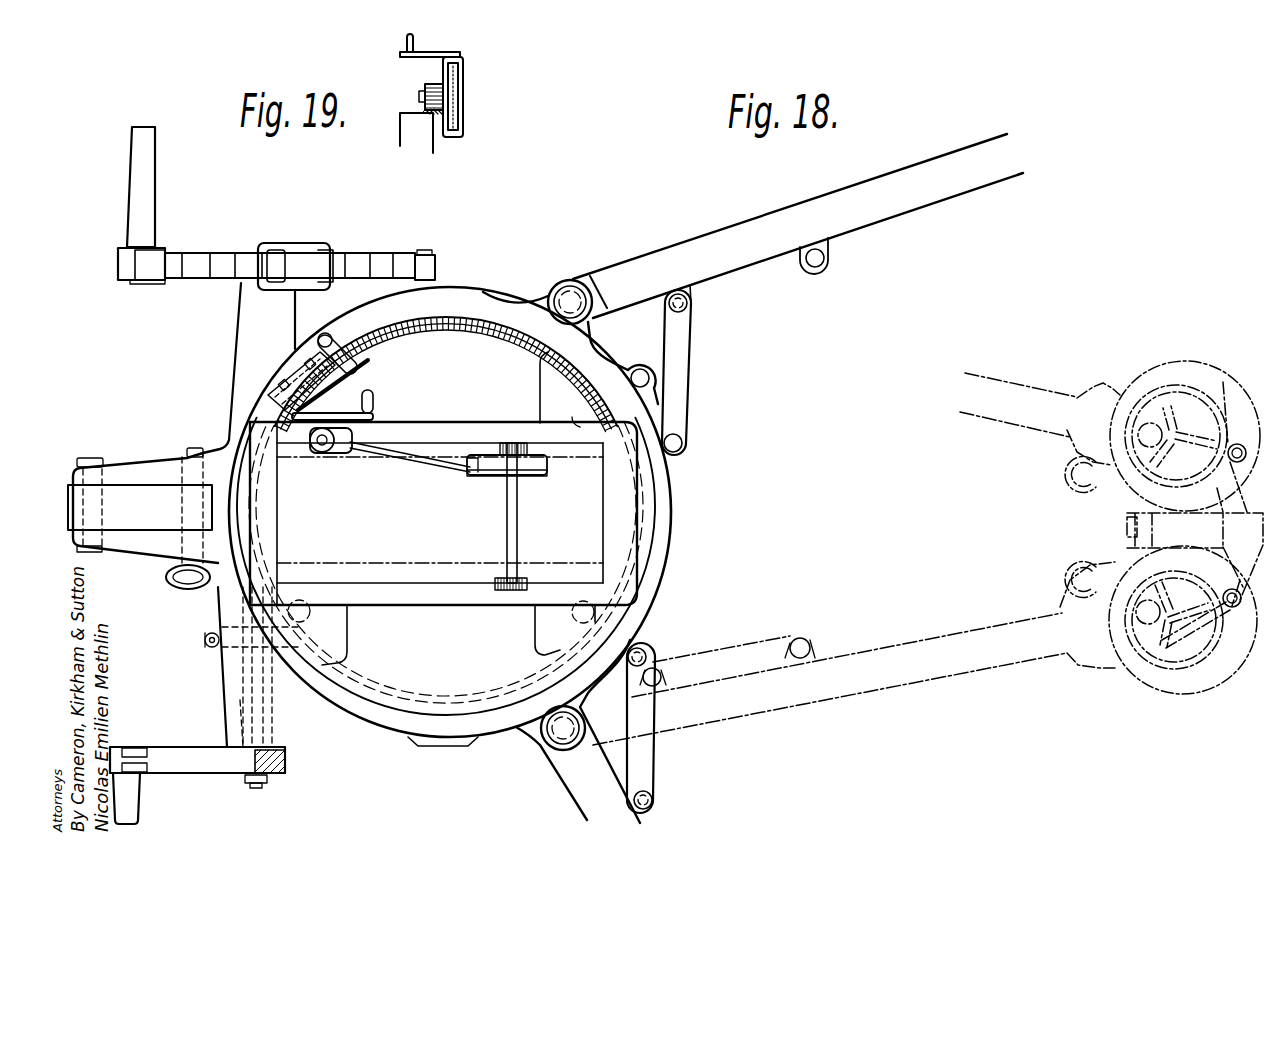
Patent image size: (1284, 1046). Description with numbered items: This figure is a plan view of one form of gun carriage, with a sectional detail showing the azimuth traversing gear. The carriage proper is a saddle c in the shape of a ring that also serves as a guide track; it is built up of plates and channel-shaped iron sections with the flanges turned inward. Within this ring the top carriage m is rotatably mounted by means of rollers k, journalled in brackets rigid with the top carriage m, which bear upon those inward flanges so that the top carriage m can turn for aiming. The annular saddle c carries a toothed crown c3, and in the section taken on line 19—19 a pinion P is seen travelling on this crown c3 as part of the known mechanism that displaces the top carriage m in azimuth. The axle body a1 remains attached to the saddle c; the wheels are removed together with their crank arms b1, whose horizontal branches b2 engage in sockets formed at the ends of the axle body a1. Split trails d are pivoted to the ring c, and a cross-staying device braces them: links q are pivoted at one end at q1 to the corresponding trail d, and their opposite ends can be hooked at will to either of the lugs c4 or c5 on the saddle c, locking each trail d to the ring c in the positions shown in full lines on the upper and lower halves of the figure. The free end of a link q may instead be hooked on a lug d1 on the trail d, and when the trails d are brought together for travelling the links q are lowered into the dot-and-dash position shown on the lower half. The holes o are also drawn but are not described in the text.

In FIG. 19, the pinion P is at (425, 92).
In FIG. 19, the toothed crown c3 is at (429, 118).
In FIG. 18, the toothed crown c3 is at (475, 337).
In FIG. 18, the saddle c is at (500, 307).
In FIG. 18, the axle body a1 is at (202, 713).
In FIG. 18, the crank arms b1 is at (197, 788).
In FIG. 18, the horizontal branches b2 is at (270, 717).
In FIG. 18, the section line 19— 19 is at (383, 403).
In FIG. 18, the top carriage m is at (449, 598).
In FIG. 18, the holes o is at (304, 612).
In FIG. 18, the rollers k is at (553, 378).
In FIG. 18, the lug c4 is at (646, 652).
In FIG. 18, the lug c5 is at (684, 451).
In FIG. 18, the links q is at (690, 373).
In FIG. 18, the pivot of link q1 is at (690, 303).
In FIG. 18, the split trails d is at (800, 215).
In FIG. 18, the lug on trail d1 is at (828, 262).